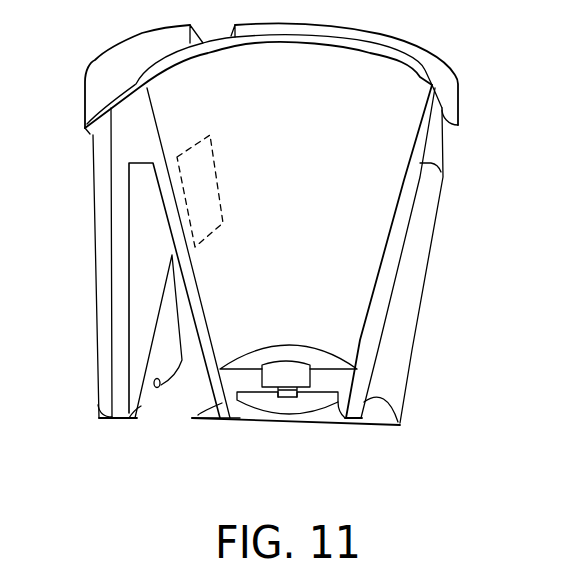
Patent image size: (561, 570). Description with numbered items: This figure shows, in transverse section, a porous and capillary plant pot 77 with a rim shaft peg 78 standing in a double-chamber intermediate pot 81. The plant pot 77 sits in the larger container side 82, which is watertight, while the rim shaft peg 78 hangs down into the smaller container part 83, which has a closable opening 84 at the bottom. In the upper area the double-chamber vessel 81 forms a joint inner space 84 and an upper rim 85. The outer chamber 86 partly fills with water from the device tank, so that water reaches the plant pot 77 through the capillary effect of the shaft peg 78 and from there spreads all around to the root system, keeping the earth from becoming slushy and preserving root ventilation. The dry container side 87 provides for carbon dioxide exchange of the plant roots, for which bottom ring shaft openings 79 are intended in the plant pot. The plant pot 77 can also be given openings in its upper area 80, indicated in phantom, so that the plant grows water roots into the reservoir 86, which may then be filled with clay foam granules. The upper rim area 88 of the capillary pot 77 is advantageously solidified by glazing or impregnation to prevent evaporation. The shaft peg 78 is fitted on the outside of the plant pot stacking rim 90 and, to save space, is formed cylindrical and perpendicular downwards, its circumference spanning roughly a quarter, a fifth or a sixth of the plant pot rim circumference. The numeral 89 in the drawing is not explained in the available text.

The plant pot 77 is at (404, 257).
The rim shaft peg 78 is at (110, 232).
The bottom ring shaft openings 79 is at (292, 397).
The openings in the upper area 80 is at (217, 174).
The double-chamber intermediate pot 81 is at (305, 428).
The larger container side 82 is at (450, 135).
The smaller container part 83 is at (97, 328).
The closable opening 84 is at (93, 136).
The upper rim 85 is at (458, 88).
The outer chamber 86 is at (107, 383).
The dry container side 87 is at (389, 392).
The upper rim area 88 is at (135, 83).
The wedge blade 89 is at (135, 257).
The plant pot stacking rim 90 is at (438, 175).